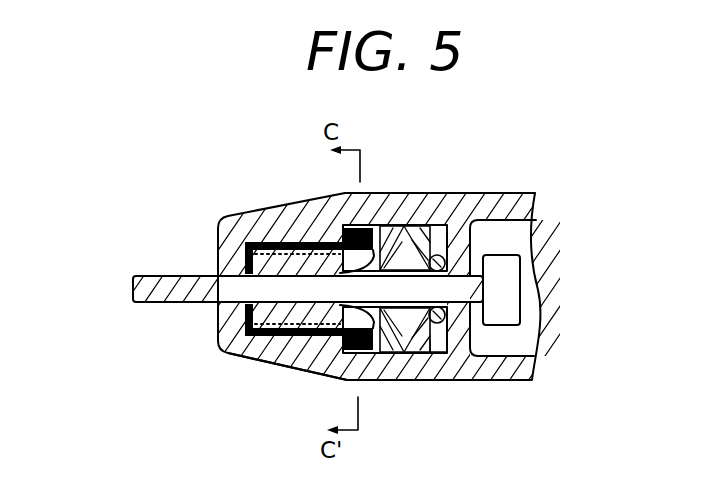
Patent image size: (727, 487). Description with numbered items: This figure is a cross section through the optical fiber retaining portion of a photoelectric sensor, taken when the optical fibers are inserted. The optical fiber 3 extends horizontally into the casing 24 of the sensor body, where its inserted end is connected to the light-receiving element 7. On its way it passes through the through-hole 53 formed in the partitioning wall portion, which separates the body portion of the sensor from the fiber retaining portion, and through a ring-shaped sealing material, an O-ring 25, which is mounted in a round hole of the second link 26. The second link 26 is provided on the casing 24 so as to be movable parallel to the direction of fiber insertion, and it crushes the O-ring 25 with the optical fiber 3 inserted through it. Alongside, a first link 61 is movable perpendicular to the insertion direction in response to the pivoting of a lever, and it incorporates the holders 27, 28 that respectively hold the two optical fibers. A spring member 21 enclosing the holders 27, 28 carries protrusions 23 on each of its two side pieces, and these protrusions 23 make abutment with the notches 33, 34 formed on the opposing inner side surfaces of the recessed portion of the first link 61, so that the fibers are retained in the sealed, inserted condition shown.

The optical fiber 3 is at (133, 289).
The light-receiving element 7 is at (503, 303).
The spring member 21 is at (263, 358).
The protrusion 23 is at (362, 224).
The casing 24 is at (514, 207).
The O-ring 25 is at (411, 226).
The second link 26 is at (420, 353).
The holder 27 is at (244, 243).
The holder 28 is at (244, 331).
The notch 33 is at (352, 226).
The notch 34 is at (318, 374).
The through-hole 53 is at (440, 257).
The first link 61 is at (397, 353).